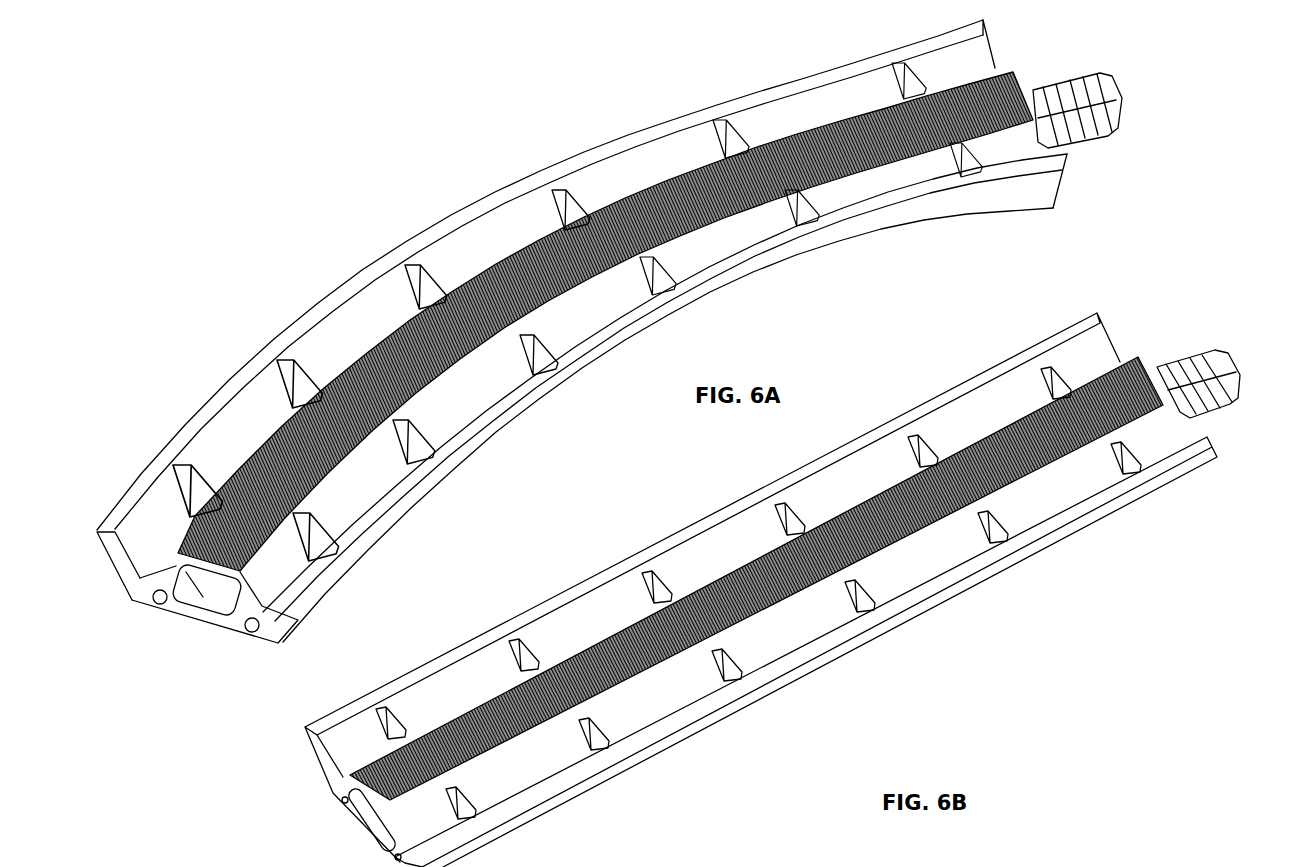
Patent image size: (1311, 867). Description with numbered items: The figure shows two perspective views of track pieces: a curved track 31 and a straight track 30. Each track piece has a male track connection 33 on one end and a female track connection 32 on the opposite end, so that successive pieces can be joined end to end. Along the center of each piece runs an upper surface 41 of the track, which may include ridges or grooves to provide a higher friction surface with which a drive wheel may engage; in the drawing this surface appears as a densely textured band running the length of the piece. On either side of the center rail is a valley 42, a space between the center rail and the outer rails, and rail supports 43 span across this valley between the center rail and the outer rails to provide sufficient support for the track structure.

In FIG. 6B, the straight track 30 is at (838, 637).
In FIG. 6A, the curved track 31 is at (433, 240).
In FIG. 6B, the curved track 31 is at (712, 587).
In FIG. 6A, the female track connection 32 is at (213, 598).
In FIG. 6B, the female track connection 32 is at (372, 820).
In FIG. 6A, the male track connection 33 is at (1115, 90).
In FIG. 6B, the male track connection 33 is at (1220, 358).
In FIG. 6A, the upper surface 41 is at (807, 133).
In FIG. 6B, the upper surface 41 is at (980, 460).
In FIG. 6A, the valley 42 is at (232, 422).
In FIG. 6A, the rail supports 43 is at (418, 443).
In FIG. 6B, the rail supports 43 is at (650, 585).